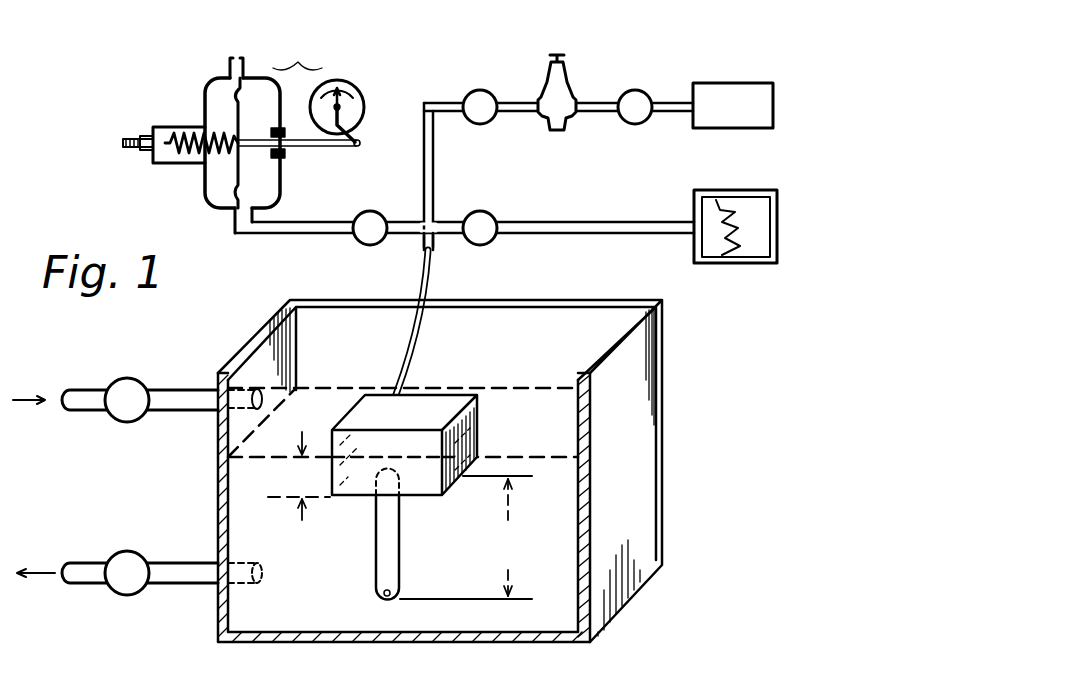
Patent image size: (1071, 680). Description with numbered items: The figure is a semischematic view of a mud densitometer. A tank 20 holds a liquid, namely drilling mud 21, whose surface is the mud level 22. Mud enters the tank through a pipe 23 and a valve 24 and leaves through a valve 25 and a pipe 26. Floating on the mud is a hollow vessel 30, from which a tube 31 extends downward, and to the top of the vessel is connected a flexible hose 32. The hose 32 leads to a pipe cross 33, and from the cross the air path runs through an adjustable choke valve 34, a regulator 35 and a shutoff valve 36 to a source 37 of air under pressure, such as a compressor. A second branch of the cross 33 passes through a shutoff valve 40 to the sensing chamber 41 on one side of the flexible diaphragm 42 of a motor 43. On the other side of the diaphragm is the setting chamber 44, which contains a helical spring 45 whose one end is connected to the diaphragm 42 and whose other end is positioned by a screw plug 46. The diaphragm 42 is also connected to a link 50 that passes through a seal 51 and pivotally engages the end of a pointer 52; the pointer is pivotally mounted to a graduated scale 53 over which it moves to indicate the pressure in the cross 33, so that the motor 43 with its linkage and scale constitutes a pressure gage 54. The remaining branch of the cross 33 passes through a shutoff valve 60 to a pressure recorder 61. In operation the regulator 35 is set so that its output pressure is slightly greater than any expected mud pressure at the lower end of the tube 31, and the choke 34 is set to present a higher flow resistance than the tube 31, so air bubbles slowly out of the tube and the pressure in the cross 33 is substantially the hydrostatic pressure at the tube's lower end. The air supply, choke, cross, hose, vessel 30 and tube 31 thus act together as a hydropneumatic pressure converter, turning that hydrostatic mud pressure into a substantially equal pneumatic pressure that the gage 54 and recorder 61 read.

The tank 20 is at (640, 445).
The drilling mud 21 is at (560, 556).
The mud level 22 is at (560, 452).
The pipe 23 is at (77, 388).
The valve 24 is at (138, 380).
The valve 25 is at (138, 553).
The pipe 26 is at (80, 562).
The hollow vessel 30 is at (432, 400).
The tube 31 is at (400, 551).
The flexible hose 32 is at (420, 340).
The pipe cross 33 is at (433, 243).
The adjustable choke valve 34 is at (478, 90).
The regulator 35 is at (572, 95).
The shutoff valve 36 is at (640, 90).
The source of air under pressure 37 is at (734, 83).
The shutoff valve 40 is at (378, 212).
The sensing chamber 41 is at (283, 190).
The flexible diaphragm 42 is at (247, 95).
The motor 43 is at (226, 66).
The setting chamber 44 is at (204, 180).
The helical spring 45 is at (186, 130).
The screw plug 46 is at (125, 138).
The link 50 is at (340, 150).
The seal 51 is at (284, 156).
The pointer 52 is at (355, 137).
The graduated scale 53 is at (346, 82).
The pressure gage 54 is at (312, 57).
The shutoff valve 60 is at (488, 211).
The pressure recorder 61 is at (778, 220).